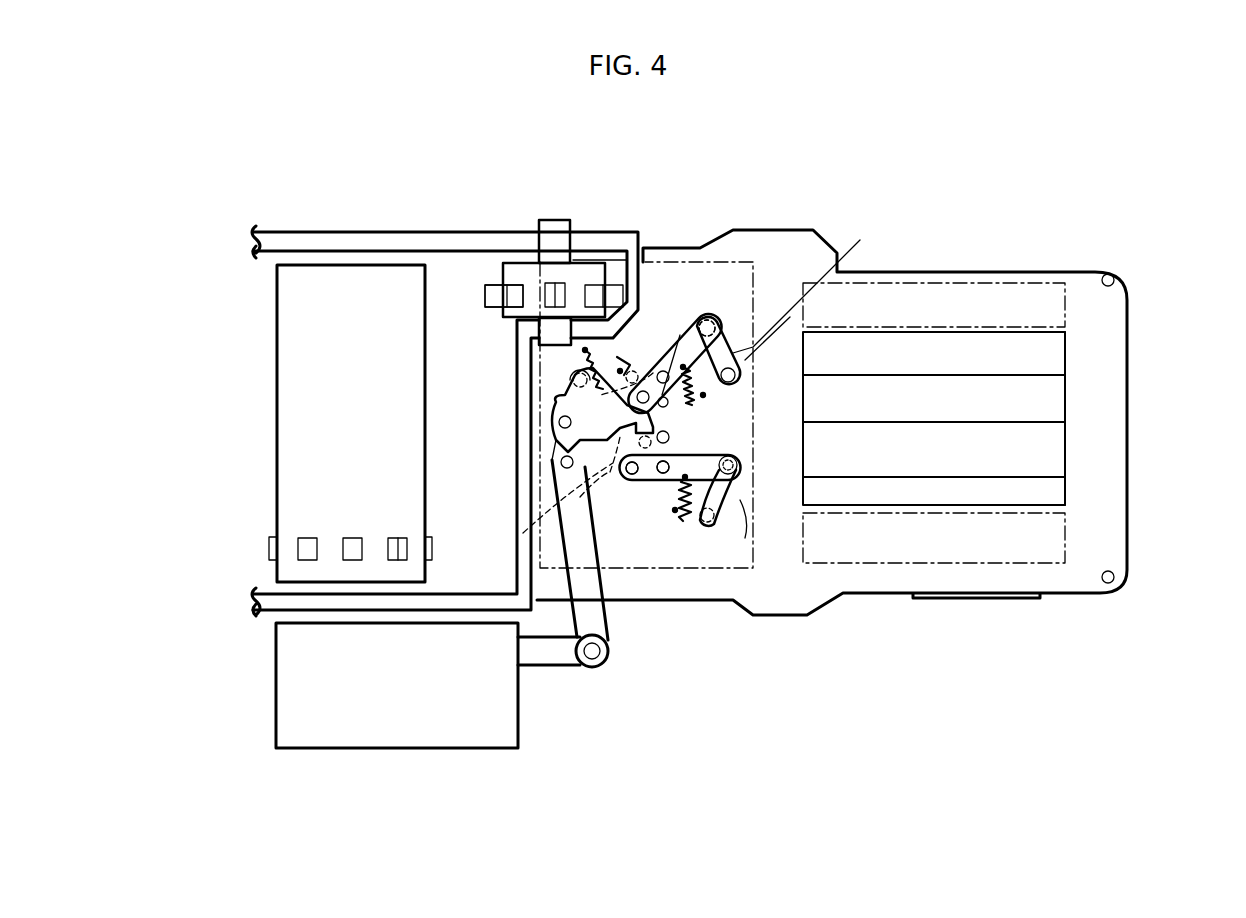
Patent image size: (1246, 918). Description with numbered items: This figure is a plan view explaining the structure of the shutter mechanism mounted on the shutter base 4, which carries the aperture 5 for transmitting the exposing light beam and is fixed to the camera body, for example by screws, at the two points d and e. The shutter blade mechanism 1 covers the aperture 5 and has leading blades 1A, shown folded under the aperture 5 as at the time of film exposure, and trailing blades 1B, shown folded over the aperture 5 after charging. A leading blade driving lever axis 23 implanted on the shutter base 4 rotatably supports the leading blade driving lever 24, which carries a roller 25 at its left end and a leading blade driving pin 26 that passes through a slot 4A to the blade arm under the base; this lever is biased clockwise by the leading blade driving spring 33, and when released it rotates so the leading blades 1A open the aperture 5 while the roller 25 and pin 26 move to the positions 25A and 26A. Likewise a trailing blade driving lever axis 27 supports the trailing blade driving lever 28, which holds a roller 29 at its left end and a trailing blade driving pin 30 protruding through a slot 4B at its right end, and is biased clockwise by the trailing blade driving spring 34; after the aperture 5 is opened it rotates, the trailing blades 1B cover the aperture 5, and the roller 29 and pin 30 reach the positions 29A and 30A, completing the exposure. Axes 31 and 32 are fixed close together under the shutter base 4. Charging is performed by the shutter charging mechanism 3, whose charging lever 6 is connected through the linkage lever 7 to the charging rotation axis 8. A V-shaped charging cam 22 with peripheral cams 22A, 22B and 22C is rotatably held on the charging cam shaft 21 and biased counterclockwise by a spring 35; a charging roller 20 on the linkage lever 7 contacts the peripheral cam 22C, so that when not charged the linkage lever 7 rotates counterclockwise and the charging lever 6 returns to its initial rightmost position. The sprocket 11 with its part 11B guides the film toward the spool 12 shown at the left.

The shutter blade mechanism 1 is at (970, 480).
The leading blades 1A is at (1068, 527).
The trailing blades 1B is at (1068, 290).
The shutter charging mechanism 3 is at (341, 748).
The shutter base 4 is at (1112, 493).
The slot 4A is at (740, 500).
The slot 4B is at (812, 293).
The aperture 5 is at (1065, 383).
The charging lever 6 is at (548, 668).
The linkage lever 7 is at (578, 604).
The charging rotation axis 8 is at (558, 468).
The sprocket 11 is at (503, 268).
The bracket nut 11B is at (485, 298).
The spool 12 is at (277, 418).
The charging roller 20 is at (575, 382).
The charging cam shaft 21 is at (560, 420).
The charging cam 22 is at (560, 432).
The peripheral cam 22A is at (575, 470).
The peripheral cam 22B is at (683, 338).
The peripheral cam 22C is at (583, 352).
The leading blade driving lever axis 23 is at (710, 453).
The leading blade driving lever 24 is at (650, 480).
The roller 25 is at (633, 480).
The roller position 25A is at (640, 450).
The leading blade driving pin 26 is at (740, 462).
The leading blade driving pin position 26A is at (717, 533).
The trailing blade driving lever axis 27 is at (666, 372).
The trailing blade driving lever 28 is at (650, 392).
The roller 29 is at (665, 350).
The roller position 29A is at (635, 374).
The trailing blade driving pin 30 is at (728, 363).
The trailing blade driving pin position 30A is at (712, 332).
The axis 31 is at (668, 402).
The axis 32 is at (743, 372).
The leading blade driving spring 33 is at (683, 517).
The trailing blade driving spring 34 is at (745, 360).
The spring 35 is at (593, 338).
The fixing point d is at (1120, 280).
The fixing point e is at (1120, 578).